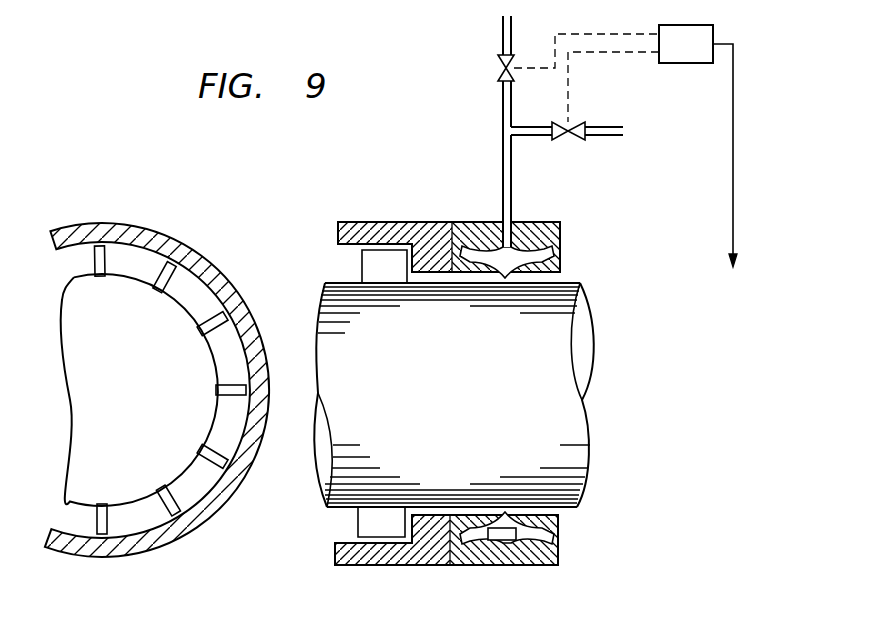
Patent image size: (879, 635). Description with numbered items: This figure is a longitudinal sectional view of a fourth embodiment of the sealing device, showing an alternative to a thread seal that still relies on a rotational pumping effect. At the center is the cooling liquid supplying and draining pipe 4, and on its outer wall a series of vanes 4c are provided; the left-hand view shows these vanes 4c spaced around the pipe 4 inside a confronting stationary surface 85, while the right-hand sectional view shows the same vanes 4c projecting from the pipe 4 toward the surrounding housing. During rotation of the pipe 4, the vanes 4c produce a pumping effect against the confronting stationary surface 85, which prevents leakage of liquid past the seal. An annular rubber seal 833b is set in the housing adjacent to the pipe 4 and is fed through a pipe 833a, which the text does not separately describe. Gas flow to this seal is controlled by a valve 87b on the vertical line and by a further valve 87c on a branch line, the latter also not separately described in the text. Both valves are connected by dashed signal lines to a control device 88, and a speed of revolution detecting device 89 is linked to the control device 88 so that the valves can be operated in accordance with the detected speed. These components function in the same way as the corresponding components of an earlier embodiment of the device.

The cooling liquid supplying and draining pipe 4 is at (111, 420).
The vanes 4c is at (166, 286).
The confronting stationary surface 85 is at (140, 243).
The valve 87b is at (498, 68).
The valve 87c is at (568, 136).
The supply pipe 833a is at (512, 195).
The annular rubber seal 833b is at (554, 253).
The control device 88 is at (613, 73).
The speed of revolution detecting device 89 is at (728, 262).